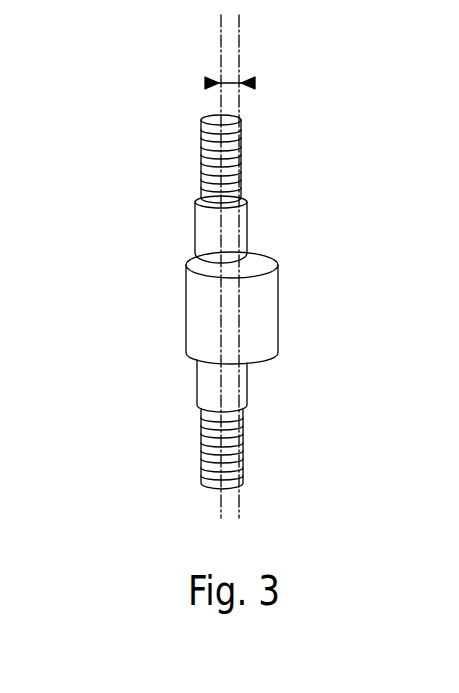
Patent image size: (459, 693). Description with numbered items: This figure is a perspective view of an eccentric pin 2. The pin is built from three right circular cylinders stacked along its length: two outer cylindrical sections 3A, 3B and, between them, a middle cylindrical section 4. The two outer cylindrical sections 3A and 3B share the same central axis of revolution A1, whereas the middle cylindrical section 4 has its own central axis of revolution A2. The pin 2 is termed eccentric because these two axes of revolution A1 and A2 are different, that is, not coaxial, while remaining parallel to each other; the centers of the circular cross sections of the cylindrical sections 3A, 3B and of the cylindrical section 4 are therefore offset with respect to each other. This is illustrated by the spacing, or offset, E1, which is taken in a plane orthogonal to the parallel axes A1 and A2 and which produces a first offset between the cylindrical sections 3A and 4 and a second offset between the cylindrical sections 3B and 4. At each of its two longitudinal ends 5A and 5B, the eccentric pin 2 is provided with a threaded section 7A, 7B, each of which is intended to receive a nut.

The eccentric pin 2 is at (130, 265).
The cylindrical section 3A is at (247, 383).
The cylindrical section 3B is at (247, 224).
The cylindrical section 4 is at (270, 309).
The longitudinal end 5A is at (178, 446).
The longitudinal end 5B is at (190, 138).
The threaded section 7A is at (243, 448).
The threaded section 7B is at (242, 158).
The axis of revolution A1 is at (219, 55).
The axis of revolution A2 is at (240, 57).
The spacing E1 is at (228, 84).